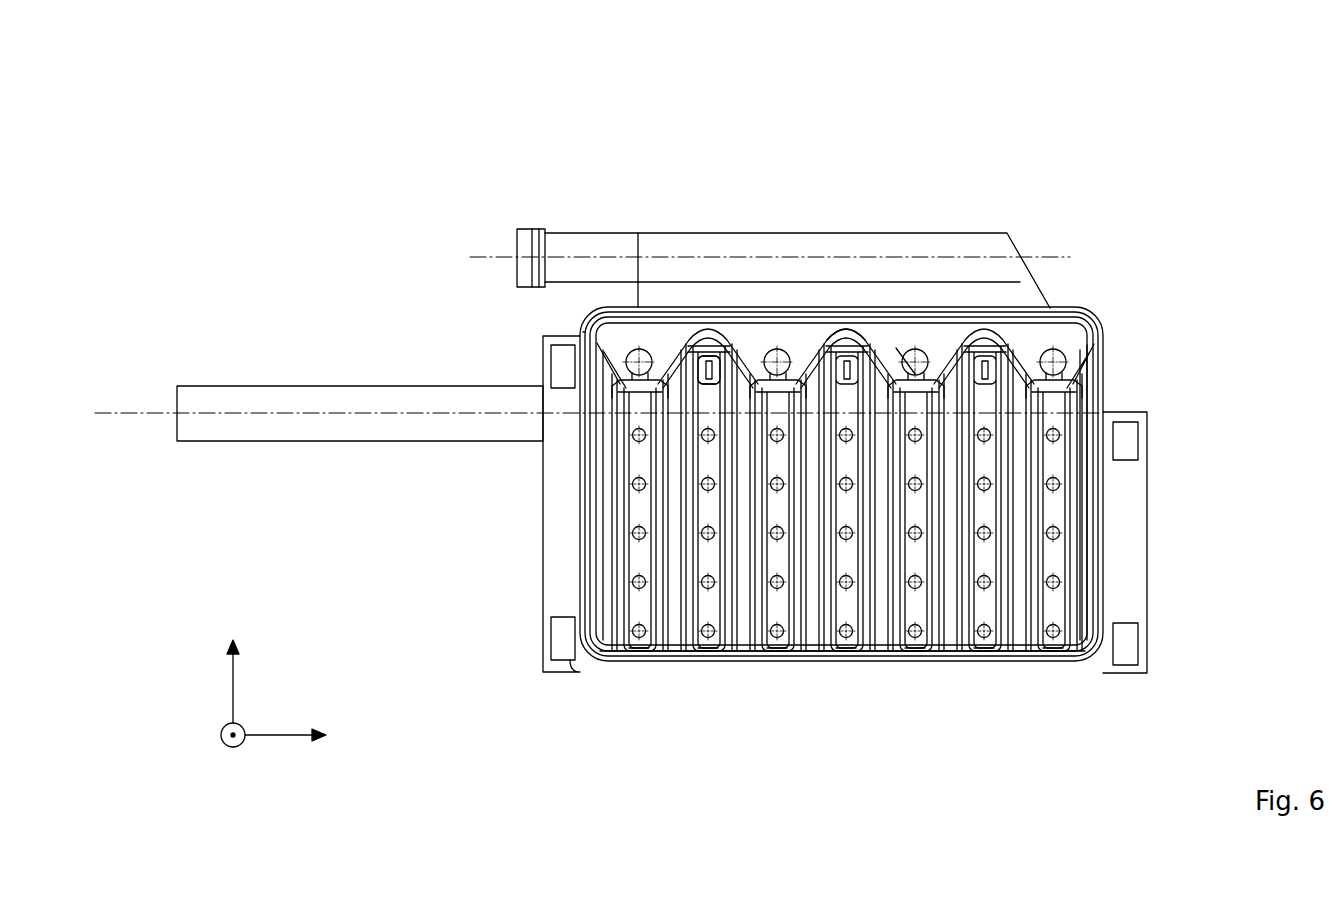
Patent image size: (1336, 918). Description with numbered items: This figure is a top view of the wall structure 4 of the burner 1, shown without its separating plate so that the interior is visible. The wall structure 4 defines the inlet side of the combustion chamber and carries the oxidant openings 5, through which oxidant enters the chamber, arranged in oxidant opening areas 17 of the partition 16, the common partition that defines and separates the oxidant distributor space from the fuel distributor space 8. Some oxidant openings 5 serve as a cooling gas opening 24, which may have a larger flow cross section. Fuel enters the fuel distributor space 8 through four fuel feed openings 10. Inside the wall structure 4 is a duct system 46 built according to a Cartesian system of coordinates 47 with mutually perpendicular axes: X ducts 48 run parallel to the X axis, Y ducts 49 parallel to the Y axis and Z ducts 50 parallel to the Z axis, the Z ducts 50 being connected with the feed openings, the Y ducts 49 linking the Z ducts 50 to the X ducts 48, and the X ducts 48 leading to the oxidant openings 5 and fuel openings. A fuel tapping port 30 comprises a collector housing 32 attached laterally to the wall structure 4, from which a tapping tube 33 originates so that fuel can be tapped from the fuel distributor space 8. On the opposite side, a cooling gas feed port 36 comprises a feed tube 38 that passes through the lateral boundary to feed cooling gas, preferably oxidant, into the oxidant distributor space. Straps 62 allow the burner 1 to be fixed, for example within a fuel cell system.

The burner 1 is at (1172, 193).
The wall structure 4 is at (1104, 316).
The oxidant openings 5 is at (636, 528).
The fuel distributor space 8 is at (891, 356).
The fuel feed openings 10 is at (642, 352).
The partition 16 is at (770, 656).
The oxidant opening areas 17 is at (614, 548).
The cooling gas opening 24 is at (708, 340).
The fuel tapping port 30 is at (572, 232).
The collector housing 32 is at (975, 232).
The tapping tube 33 is at (552, 230).
The cooling gas feed port 36 is at (356, 386).
The feed tube 38 is at (292, 406).
The duct system 46 is at (1096, 384).
The system of coordinates 47 is at (258, 702).
The X ducts 48 is at (1100, 728).
The Y ducts 49 is at (756, 340).
The Z ducts 50 is at (626, 344).
The straps 62 is at (560, 340).